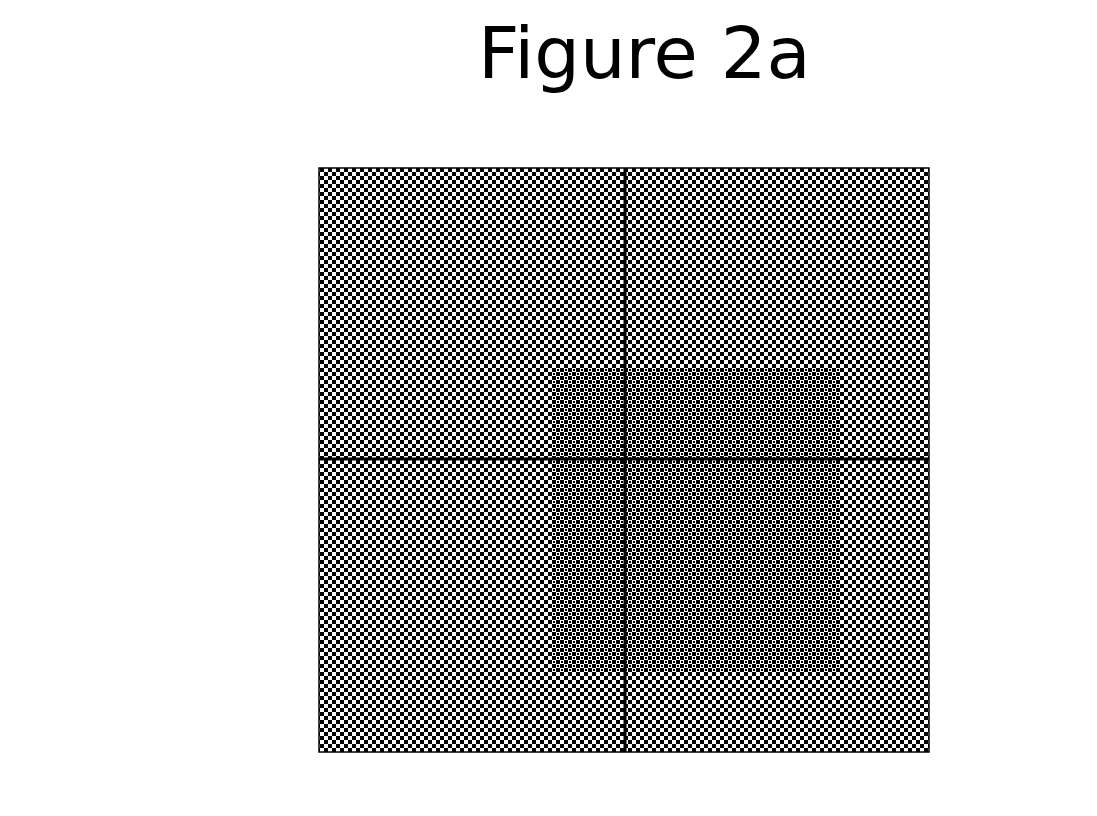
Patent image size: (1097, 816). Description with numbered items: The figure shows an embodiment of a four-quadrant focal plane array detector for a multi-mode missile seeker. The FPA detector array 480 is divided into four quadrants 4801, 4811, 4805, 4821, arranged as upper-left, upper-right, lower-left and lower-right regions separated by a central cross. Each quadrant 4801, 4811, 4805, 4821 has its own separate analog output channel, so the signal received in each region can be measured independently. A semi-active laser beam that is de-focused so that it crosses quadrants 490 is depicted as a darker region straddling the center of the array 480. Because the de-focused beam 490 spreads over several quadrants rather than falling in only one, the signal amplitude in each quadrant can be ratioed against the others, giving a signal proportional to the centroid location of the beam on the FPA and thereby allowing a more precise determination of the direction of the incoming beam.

The FPA detector array 480 is at (524, 449).
The quadrant 4801 is at (376, 313).
The quadrant 4811 is at (839, 300).
The quadrant 4805 is at (370, 605).
The quadrant 4821 is at (852, 605).
The de-focused SAL beam crossing quadrants 490 is at (818, 519).